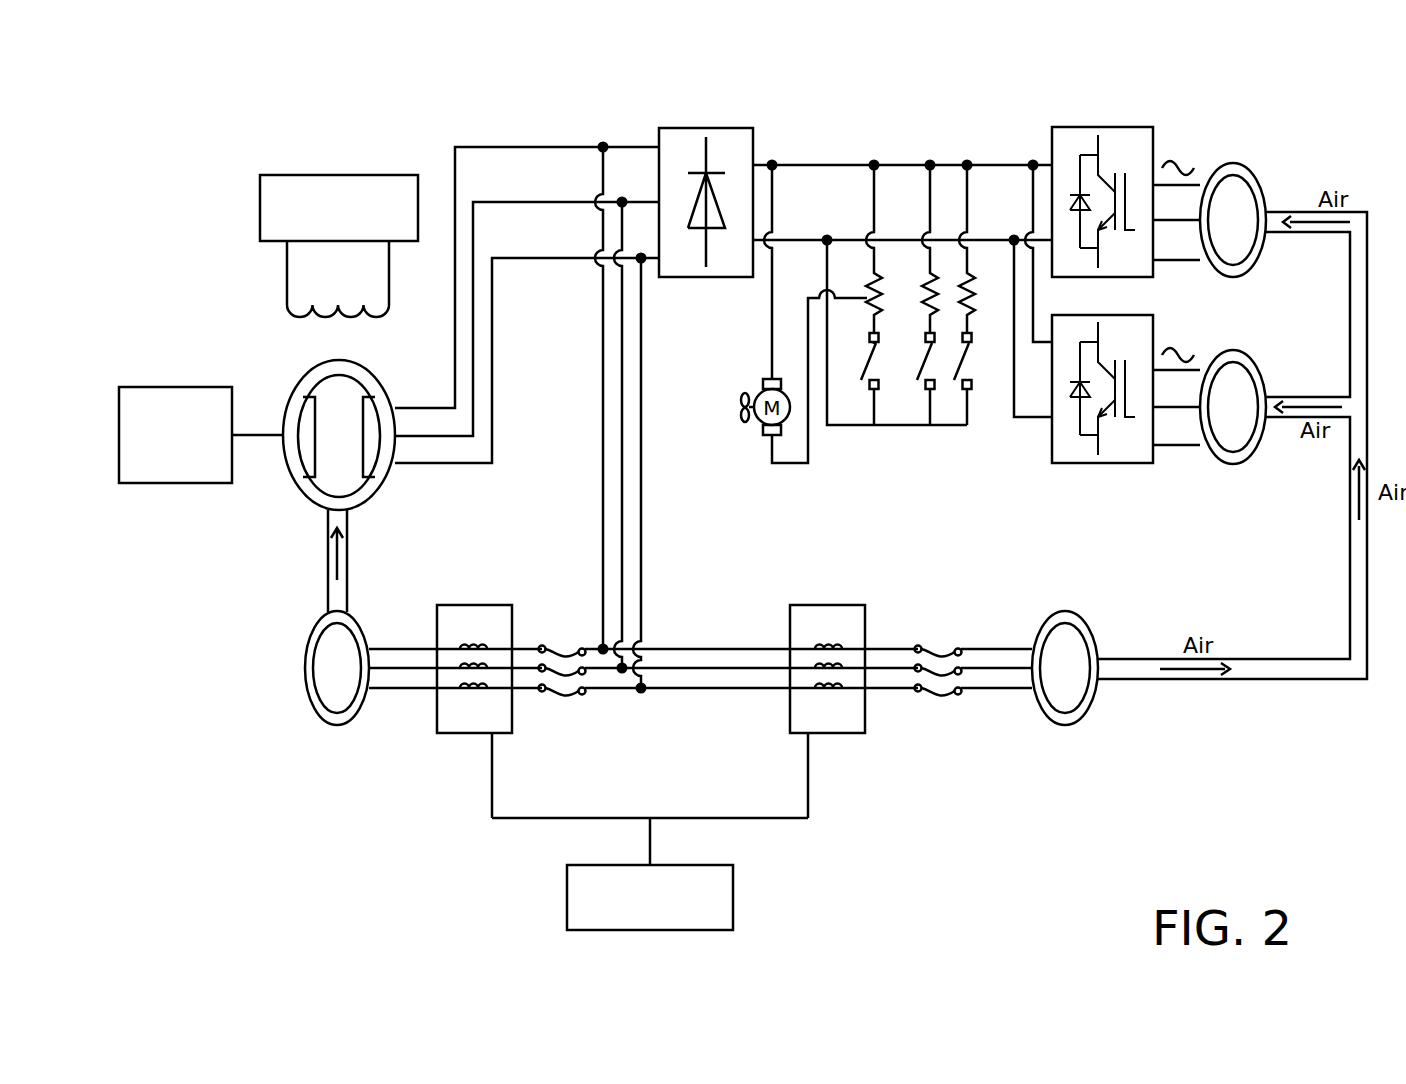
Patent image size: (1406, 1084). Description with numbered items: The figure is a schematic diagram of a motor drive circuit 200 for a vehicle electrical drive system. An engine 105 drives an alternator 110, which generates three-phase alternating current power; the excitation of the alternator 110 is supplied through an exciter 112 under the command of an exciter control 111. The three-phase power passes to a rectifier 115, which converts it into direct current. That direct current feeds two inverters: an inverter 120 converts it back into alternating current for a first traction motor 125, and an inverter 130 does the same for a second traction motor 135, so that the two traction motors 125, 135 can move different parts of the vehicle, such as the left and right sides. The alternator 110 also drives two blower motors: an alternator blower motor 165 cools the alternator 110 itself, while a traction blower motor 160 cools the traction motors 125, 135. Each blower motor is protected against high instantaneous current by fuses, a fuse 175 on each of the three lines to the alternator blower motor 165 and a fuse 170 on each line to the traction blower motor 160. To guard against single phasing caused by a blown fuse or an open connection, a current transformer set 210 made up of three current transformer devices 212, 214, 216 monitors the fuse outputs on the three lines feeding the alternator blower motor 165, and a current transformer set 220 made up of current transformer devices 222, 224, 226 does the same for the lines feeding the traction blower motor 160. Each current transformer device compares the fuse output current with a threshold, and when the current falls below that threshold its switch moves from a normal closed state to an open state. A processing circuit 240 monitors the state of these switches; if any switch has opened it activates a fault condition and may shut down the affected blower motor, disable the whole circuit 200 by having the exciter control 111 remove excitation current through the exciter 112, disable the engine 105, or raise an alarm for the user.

The motor drive circuit 200 is at (148, 125).
The engine 105 is at (138, 408).
The alternator 110 is at (322, 473).
The exciter control 111 is at (403, 190).
The exciter 112 is at (313, 307).
The rectifier 115 is at (722, 146).
The inverter 120 is at (1060, 137).
The first traction motor 125 is at (1280, 175).
The inverter 130 is at (1060, 454).
The second traction motor 135 is at (1280, 360).
The traction blower motor 160 is at (1088, 693).
The alternator blower motor 165 is at (335, 722).
The fuse 170 is at (930, 714).
The fuse 175 is at (560, 714).
The current transformer set 210 is at (483, 681).
The current transformer device 212 is at (465, 640).
The current transformer device 214 is at (465, 662).
The current transformer device 216 is at (465, 682).
The current transformer set 220 is at (805, 681).
The current transformer device 222 is at (820, 642).
The current transformer device 224 is at (823, 663).
The current transformer device 226 is at (837, 682).
The processing circuit 240 is at (582, 902).